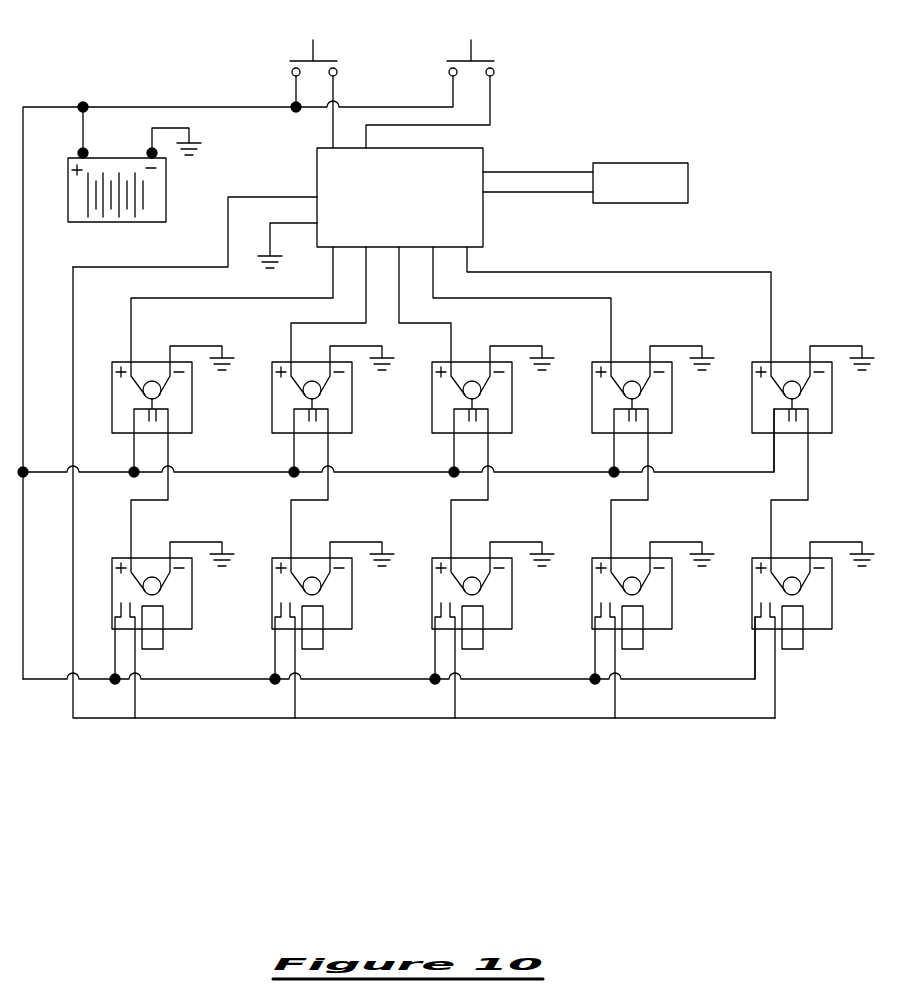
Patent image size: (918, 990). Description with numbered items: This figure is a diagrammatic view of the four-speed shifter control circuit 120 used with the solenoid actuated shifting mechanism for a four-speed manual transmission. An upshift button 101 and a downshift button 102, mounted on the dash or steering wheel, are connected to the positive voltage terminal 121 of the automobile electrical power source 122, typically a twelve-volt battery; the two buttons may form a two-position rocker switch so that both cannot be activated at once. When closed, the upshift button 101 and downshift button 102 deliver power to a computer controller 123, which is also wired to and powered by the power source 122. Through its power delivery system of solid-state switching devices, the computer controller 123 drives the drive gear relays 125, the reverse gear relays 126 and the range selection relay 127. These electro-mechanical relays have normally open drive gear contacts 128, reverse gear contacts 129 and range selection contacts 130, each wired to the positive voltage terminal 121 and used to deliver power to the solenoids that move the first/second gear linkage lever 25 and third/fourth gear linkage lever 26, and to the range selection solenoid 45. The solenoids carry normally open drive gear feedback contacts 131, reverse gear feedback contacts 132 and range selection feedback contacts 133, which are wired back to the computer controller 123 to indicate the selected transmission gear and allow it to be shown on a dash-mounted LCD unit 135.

The upshift button 101 is at (289, 59).
The downshift button 102 is at (447, 59).
The positive voltage terminal 121 is at (86, 151).
The automobile electrical power source 122 is at (167, 190).
The computer controller 123 is at (484, 153).
The LCD unit 135 is at (689, 169).
The drive gear relays 125 is at (192, 401).
The reverse gear relays 126 is at (512, 401).
The range selection relay 127 is at (752, 400).
The drive gear contacts 128 is at (315, 418).
The reverse gear contacts 129 is at (635, 418).
The range selection contacts 130 is at (790, 415).
The drive gear feedback contacts 131 is at (282, 603).
The reverse gear feedback contacts 132 is at (602, 603).
The range selection feedback contacts 133 is at (765, 603).
The first/second gear linkage lever 25 is at (192, 617).
The third/fourth gear linkage lever 26 is at (512, 617).
The range selection solenoid 45 is at (752, 619).
The four-speed shifter control circuit 120 is at (630, 803).